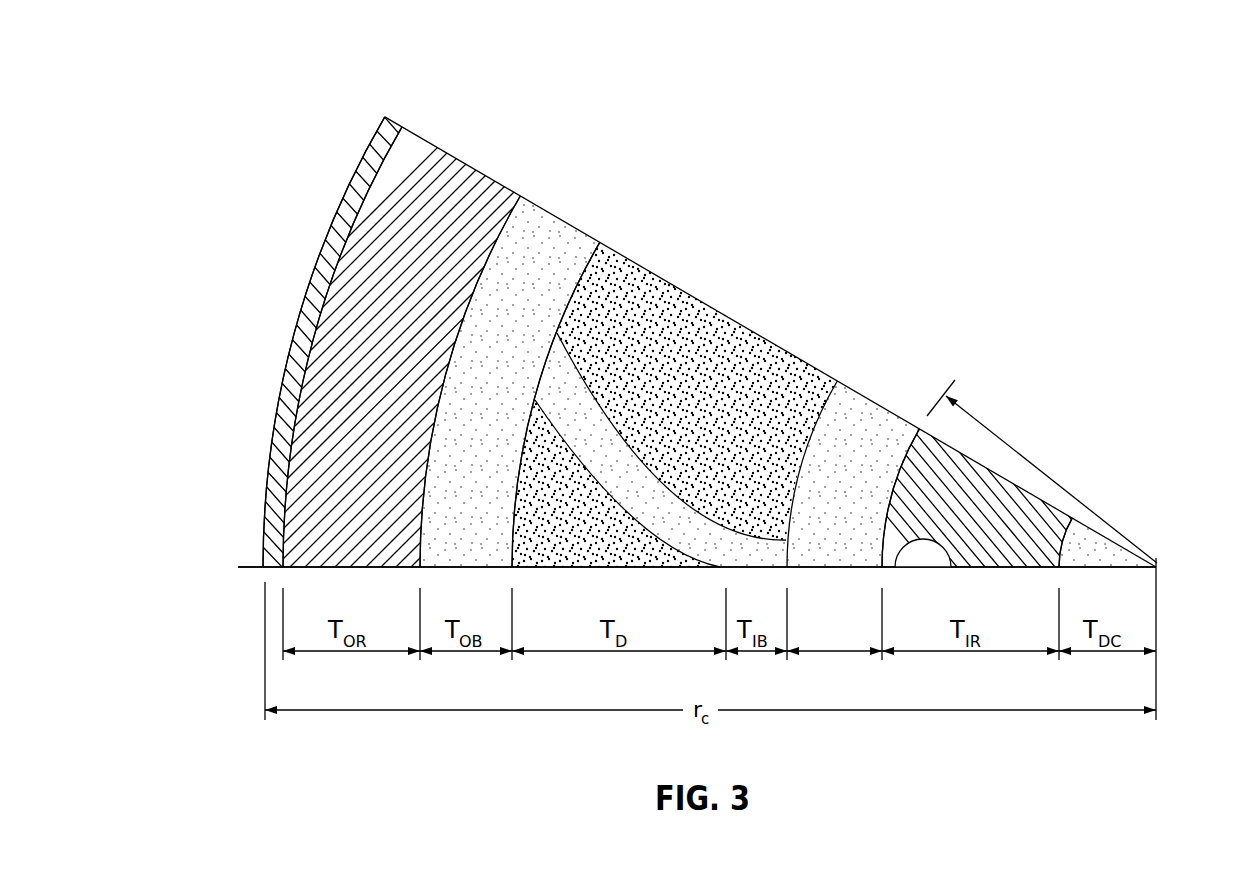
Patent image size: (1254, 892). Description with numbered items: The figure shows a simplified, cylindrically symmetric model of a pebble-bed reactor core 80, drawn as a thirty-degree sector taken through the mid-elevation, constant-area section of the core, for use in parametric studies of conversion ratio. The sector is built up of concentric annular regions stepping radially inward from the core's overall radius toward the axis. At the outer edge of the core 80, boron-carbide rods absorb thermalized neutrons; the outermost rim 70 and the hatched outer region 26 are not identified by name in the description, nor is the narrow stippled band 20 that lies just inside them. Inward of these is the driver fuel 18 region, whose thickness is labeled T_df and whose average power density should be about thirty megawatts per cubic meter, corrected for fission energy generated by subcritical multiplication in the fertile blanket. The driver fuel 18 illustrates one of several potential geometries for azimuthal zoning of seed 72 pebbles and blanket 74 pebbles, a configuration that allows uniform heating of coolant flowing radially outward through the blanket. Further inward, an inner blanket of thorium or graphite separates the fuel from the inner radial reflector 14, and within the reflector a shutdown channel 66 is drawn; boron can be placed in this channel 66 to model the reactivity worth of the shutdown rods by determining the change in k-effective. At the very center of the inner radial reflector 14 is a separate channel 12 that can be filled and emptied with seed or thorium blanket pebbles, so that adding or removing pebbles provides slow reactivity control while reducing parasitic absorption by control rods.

The core 80 is at (180, 100).
The outer sleeve 70 is at (290, 375).
The outer ring 26 is at (445, 160).
The outer bond layer 20 is at (557, 213).
The driver fuel 18 is at (660, 277).
The seed pebbles 72 is at (748, 358).
The blanket pebbles 74 is at (712, 542).
The inner radial reflector 14 is at (953, 442).
The shutdown channel 66 is at (927, 561).
The channel 12 is at (1100, 533).